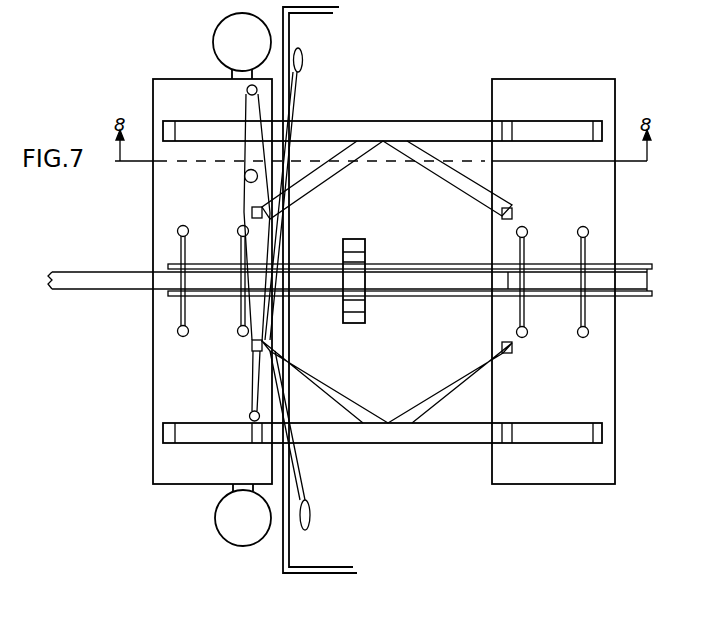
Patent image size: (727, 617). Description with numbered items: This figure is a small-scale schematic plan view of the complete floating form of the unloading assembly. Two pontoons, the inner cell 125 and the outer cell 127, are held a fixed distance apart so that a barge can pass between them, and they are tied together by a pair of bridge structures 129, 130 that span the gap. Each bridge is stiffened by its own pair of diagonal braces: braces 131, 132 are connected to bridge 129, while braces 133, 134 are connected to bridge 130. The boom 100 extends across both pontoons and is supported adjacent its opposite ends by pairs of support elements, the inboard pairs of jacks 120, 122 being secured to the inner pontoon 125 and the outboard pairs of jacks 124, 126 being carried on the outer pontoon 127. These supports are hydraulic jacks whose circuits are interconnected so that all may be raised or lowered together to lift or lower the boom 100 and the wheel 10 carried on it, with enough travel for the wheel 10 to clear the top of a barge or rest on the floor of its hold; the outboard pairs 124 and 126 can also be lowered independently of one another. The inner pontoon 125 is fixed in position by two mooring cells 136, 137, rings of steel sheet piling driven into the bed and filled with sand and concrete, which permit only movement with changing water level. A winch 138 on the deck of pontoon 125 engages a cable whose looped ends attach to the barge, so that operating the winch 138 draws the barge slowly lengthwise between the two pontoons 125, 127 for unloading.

The wheel 10 is at (366, 252).
The boom 100 is at (625, 267).
The support element 120 is at (180, 245).
The support element 122 is at (240, 320).
The support element 124 is at (526, 237).
The cell 125 is at (157, 387).
The support element 126 is at (578, 318).
The cell 127 is at (603, 383).
The bridge structure 129 is at (330, 440).
The bridge structure 130 is at (320, 126).
The diagonal brace 131 is at (320, 374).
The diagonal brace 132 is at (447, 380).
The diagonal brace 133 is at (316, 178).
The diagonal brace 134 is at (438, 174).
The mooring cell 136 is at (257, 530).
The mooring cell 137 is at (262, 43).
The winch 138 is at (244, 170).